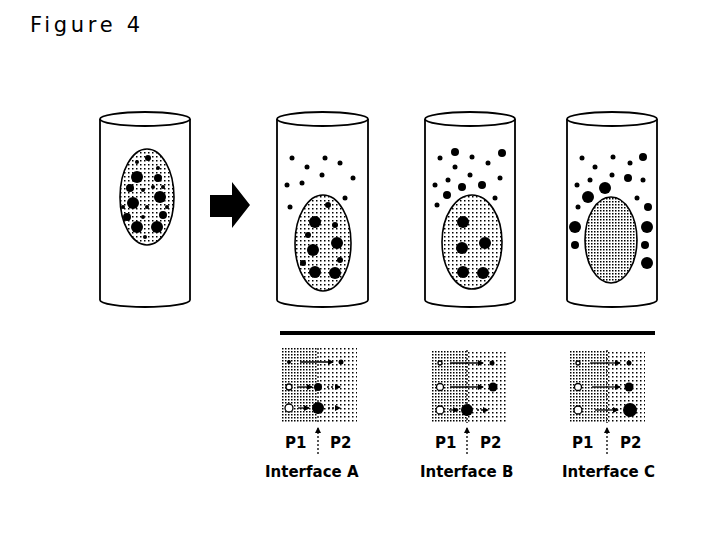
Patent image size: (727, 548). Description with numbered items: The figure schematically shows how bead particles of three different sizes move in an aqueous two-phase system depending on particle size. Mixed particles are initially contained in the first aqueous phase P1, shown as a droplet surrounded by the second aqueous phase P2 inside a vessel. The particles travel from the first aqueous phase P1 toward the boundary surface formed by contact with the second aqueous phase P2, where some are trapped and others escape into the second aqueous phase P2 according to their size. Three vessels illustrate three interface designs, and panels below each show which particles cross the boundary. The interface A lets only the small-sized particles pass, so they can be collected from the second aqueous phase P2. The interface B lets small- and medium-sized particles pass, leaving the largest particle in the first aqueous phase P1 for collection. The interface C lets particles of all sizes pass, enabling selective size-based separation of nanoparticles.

The first aqueous phase P1 is at (121, 169).
The second aqueous phase P2 is at (116, 262).
The interface A is at (322, 190).
The interface B is at (470, 190).
The interface C is at (612, 190).